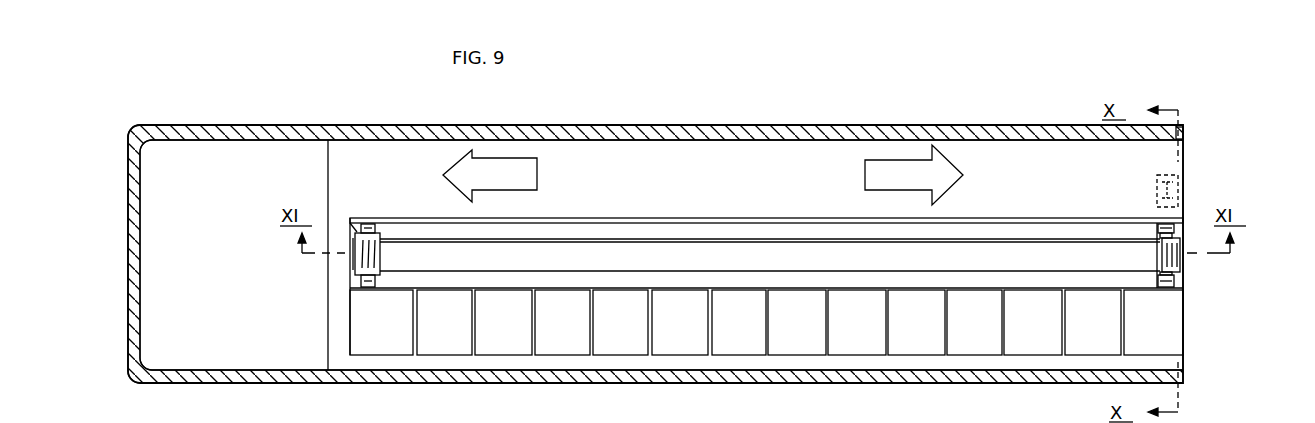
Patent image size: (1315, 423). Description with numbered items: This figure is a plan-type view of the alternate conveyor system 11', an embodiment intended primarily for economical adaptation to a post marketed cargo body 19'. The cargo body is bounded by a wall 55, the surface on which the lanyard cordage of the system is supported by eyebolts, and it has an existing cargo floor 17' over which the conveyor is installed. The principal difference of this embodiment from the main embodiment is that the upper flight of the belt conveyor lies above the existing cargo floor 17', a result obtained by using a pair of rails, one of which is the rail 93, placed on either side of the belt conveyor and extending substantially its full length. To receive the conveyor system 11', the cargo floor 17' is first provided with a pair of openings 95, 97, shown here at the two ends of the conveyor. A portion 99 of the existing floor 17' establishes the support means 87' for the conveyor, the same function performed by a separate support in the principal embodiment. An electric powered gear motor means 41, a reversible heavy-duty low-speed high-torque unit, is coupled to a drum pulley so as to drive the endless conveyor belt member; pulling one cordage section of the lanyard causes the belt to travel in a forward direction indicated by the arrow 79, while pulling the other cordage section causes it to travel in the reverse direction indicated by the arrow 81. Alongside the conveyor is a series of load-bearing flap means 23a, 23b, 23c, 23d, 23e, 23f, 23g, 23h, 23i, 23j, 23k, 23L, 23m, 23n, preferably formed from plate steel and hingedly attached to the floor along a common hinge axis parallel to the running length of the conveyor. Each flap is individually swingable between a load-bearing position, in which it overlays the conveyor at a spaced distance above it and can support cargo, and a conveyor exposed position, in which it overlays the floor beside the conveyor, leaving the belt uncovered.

The alternate conveyor system 11' is at (721, 213).
The wall of the cargo body 55 is at (896, 139).
The post marketed cargo body 19' is at (259, 255).
The existing cargo floor 17' is at (766, 267).
The rail 93 is at (766, 220).
The portion of the floor 99 is at (656, 238).
The support means 87' is at (770, 214).
The opening in the cargo floor 95 is at (370, 188).
The opening in the cargo floor 97 is at (1138, 220).
The gear motor means 41 is at (1180, 180).
The arrow indicating forward direction 79 is at (523, 182).
The arrow indicating reverse direction 81 is at (917, 183).
The load-bearing flap means 23a is at (366, 330).
The load-bearing flap means 23b is at (460, 330).
The load-bearing flap means 23c is at (488, 330).
The load-bearing flap means 23d is at (578, 330).
The load-bearing flap means 23e is at (636, 330).
The load-bearing flap means 23f is at (665, 330).
The load-bearing flap means 23g is at (724, 330).
The load-bearing flap means 23h is at (782, 330).
The load-bearing flap means 23i is at (842, 330).
The load-bearing flap means 23j is at (932, 330).
The load-bearing flap means 23k is at (990, 330).
The load-bearing flap means 23L is at (1018, 330).
The load-bearing flap means 23m is at (1078, 330).
The load-bearing flap means 23n is at (1138, 330).